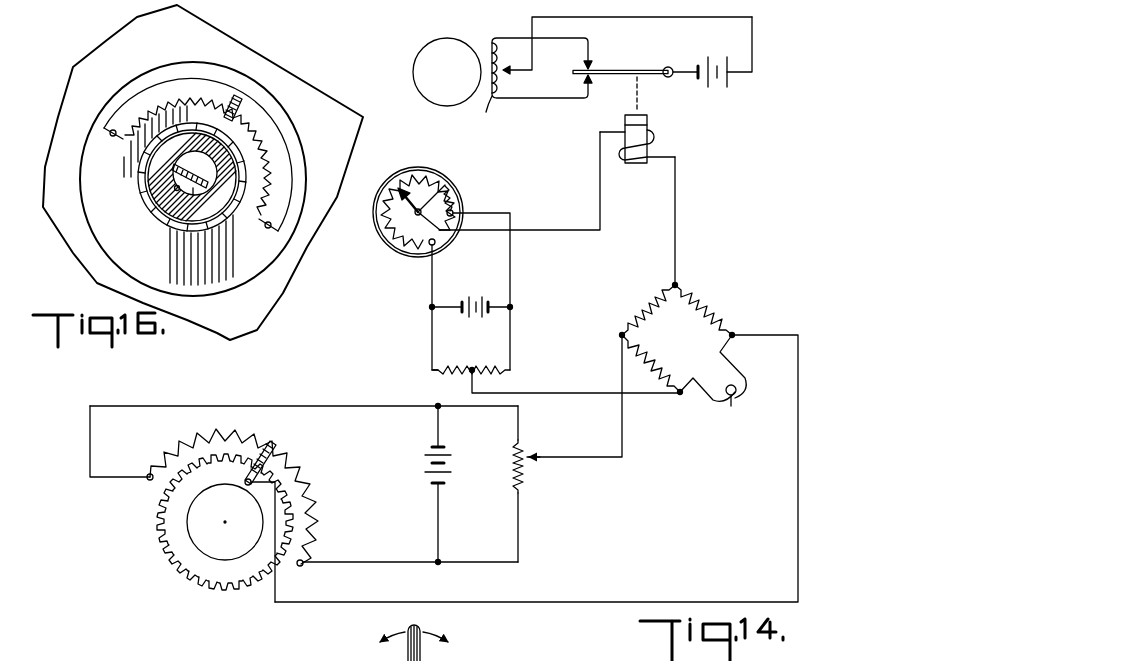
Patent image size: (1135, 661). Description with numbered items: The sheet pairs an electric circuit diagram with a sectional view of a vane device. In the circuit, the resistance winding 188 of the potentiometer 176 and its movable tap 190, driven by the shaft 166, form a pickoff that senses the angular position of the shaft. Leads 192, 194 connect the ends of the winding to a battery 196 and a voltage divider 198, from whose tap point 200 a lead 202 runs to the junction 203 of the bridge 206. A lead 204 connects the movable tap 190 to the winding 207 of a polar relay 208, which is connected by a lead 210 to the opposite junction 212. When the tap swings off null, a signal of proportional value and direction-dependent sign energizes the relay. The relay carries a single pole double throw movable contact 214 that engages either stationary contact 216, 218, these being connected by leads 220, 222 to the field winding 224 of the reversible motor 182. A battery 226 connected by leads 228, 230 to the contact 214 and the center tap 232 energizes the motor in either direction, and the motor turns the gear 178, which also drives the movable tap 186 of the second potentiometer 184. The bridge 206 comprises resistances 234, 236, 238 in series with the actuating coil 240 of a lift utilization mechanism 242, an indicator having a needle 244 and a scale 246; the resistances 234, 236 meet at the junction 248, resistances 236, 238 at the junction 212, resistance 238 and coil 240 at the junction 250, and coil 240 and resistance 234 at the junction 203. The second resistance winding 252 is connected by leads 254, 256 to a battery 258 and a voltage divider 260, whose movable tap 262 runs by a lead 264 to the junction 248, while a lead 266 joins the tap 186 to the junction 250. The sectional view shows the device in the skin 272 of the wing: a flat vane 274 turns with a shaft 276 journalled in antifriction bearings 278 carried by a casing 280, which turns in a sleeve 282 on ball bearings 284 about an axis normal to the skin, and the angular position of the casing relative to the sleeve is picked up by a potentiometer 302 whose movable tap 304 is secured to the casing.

In FIG. 14, the shaft 166 is at (447, 185).
In FIG. 14, the potentiometer 176 is at (388, 247).
In FIG. 14, the gear 178 is at (170, 530).
In FIG. 14, the reversible motor 182 is at (463, 44).
In FIG. 14, the second potentiometer 184 is at (170, 448).
In FIG. 14, the movable tap 186 is at (268, 462).
In FIG. 14, the resistance winding 188 is at (383, 224).
In FIG. 14, the movable tap 190 is at (417, 188).
In FIG. 14, the lead 192 is at (511, 214).
In FIG. 14, the lead 194 is at (430, 283).
In FIG. 14, the battery 196 is at (480, 302).
In FIG. 14, the voltage divider 198 is at (444, 372).
In FIG. 14, the tap point 200 is at (476, 368).
In FIG. 14, the lead 202 is at (476, 383).
In FIG. 14, the junction 203 is at (678, 394).
In FIG. 14, the lead 204 is at (578, 231).
In FIG. 14, the bridge 206 is at (684, 348).
In FIG. 14, the winding 207 is at (649, 143).
In FIG. 14, the polar relay 208 is at (658, 131).
In FIG. 14, the lead 210 is at (678, 208).
In FIG. 14, the junction 212 is at (678, 286).
In FIG. 14, the movable contact 214 is at (628, 70).
In FIG. 14, the stationary contact 216 is at (591, 52).
In FIG. 14, the stationary contact 218 is at (593, 90).
In FIG. 14, the lead 220 is at (513, 36).
In FIG. 14, the lead 222 is at (553, 100).
In FIG. 14, the field winding 224 is at (495, 113).
In FIG. 14, the battery 226 is at (716, 90).
In FIG. 14, the lead 228 is at (688, 64).
In FIG. 14, the lead 230 is at (755, 60).
In FIG. 14, the center tap 232 is at (514, 69).
In FIG. 14, the resistance 234 is at (658, 363).
In FIG. 14, the resistance 236 is at (640, 305).
In FIG. 14, the resistance 238 is at (708, 308).
In FIG. 14, the actuating coil 240 is at (746, 391).
In FIG. 14, the lift utilization mechanism 242 is at (762, 368).
In FIG. 14, the needle 244 is at (731, 406).
In FIG. 14, the scale 246 is at (700, 388).
In FIG. 14, the junction 248 is at (620, 334).
In FIG. 14, the junction 250 is at (733, 334).
In FIG. 14, the resistance winding 252 is at (316, 508).
In FIG. 14, the lead 254 is at (398, 407).
In FIG. 14, the lead 256 is at (418, 560).
In FIG. 14, the battery 258 is at (448, 470).
In FIG. 14, the voltage divider 260 is at (522, 447).
In FIG. 14, the movable tap 262 is at (540, 462).
In FIG. 14, the lead 264 is at (624, 447).
In FIG. 14, the lead 266 is at (340, 603).
In FIG. 16, the skin 272 is at (96, 59).
In FIG. 16, the vane 274 is at (197, 230).
In FIG. 16, the shaft 276 is at (147, 193).
In FIG. 16, the antifriction bearings 278 is at (177, 167).
In FIG. 16, the casing 280 is at (163, 220).
In FIG. 16, the sleeve 282 is at (212, 277).
In FIG. 16, the ball bearings 284 is at (230, 220).
In FIG. 16, the potentiometer 302 is at (285, 166).
In FIG. 16, the movable tap 304 is at (228, 100).